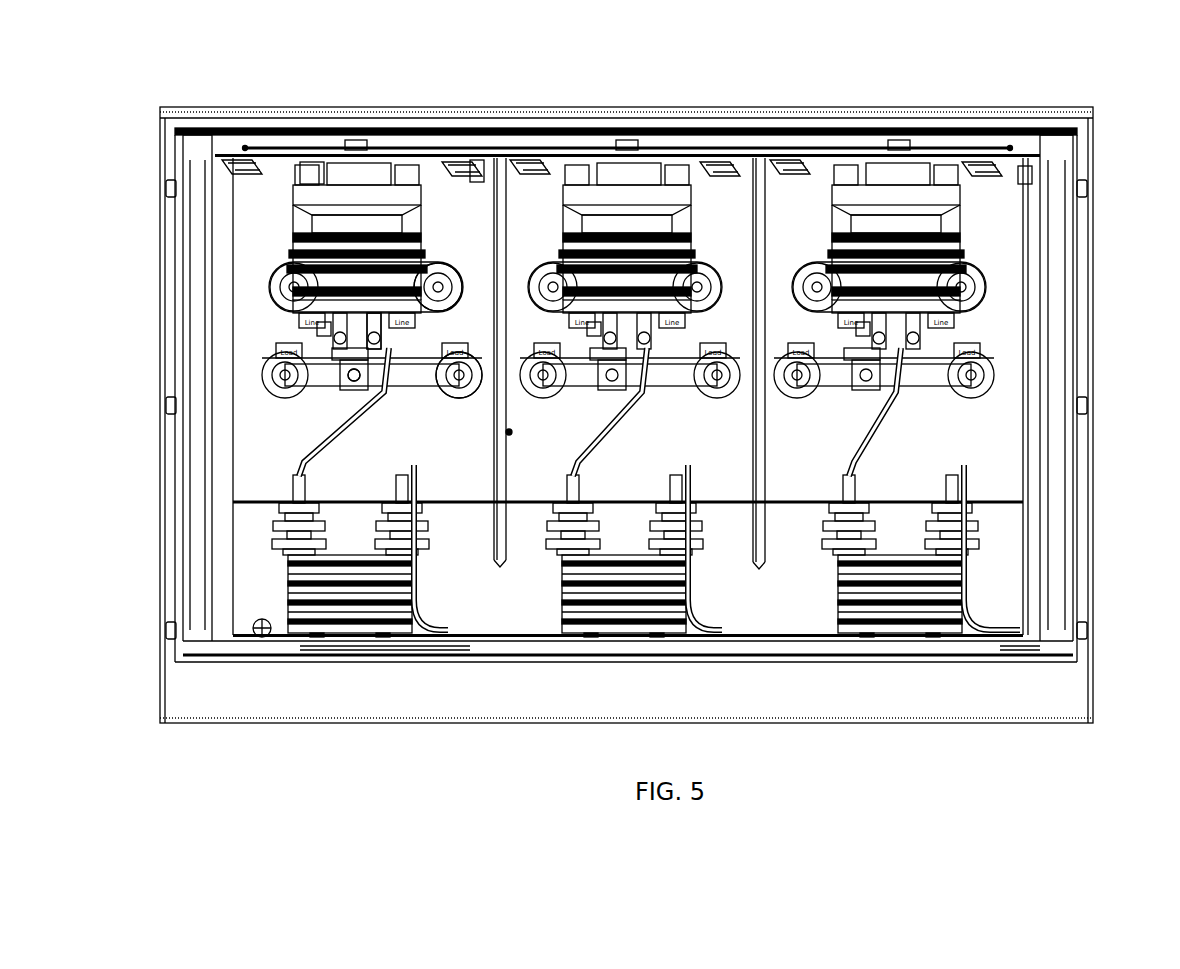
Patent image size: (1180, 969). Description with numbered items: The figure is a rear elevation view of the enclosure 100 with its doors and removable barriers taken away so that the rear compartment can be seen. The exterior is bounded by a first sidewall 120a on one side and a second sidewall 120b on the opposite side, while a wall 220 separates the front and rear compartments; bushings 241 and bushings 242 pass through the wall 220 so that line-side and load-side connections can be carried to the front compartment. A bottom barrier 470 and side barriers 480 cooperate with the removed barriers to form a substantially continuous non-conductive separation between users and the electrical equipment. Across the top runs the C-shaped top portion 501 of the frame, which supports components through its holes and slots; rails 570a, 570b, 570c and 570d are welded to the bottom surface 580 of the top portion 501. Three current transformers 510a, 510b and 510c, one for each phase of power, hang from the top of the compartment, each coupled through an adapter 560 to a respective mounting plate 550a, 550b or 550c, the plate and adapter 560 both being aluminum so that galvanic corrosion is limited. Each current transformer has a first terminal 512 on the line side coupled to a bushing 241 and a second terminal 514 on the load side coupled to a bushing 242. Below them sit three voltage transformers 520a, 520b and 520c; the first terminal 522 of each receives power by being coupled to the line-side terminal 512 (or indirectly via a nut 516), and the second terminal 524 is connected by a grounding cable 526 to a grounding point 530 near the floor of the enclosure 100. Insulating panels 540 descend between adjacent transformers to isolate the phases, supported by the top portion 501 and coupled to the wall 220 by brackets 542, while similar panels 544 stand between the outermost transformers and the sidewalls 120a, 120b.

The enclosure 100 is at (204, 74).
The first sidewall 120a is at (154, 444).
The second sidewall 120b is at (1106, 382).
The wall 220 is at (637, 442).
The bushings 241 is at (438, 263).
The bushings 242 is at (462, 388).
The bottom barrier 470 is at (245, 650).
The side barriers 480 is at (200, 487).
The top portion 501 is at (1020, 140).
The first current transformer 510a is at (365, 178).
The second current transformer 510b is at (640, 178).
The third current transformer 510c is at (920, 178).
The first terminal 512 is at (388, 350).
The second terminal 514 is at (330, 345).
The nut 516 is at (348, 381).
The first voltage transformer 520a is at (360, 600).
The second voltage transformer 520b is at (640, 600).
The third voltage transformer 520c is at (925, 600).
The first terminal 522 is at (297, 488).
The second terminal 524 is at (428, 485).
The grounding cable 526 is at (445, 642).
The grounding point 530 is at (1035, 622).
The panels 540 is at (503, 535).
The brackets 542 is at (512, 432).
The panels 544 is at (1030, 307).
The first mounting plate 550a is at (452, 176).
The second mounting plate 550b is at (714, 176).
The third mounting plate 550c is at (975, 176).
The adapter 560 is at (313, 162).
The first rail 570a is at (240, 174).
The second rail 570b is at (480, 162).
The third rail 570c is at (782, 176).
The fourth rail 570d is at (520, 176).
The bottom surface 580 is at (1033, 182).